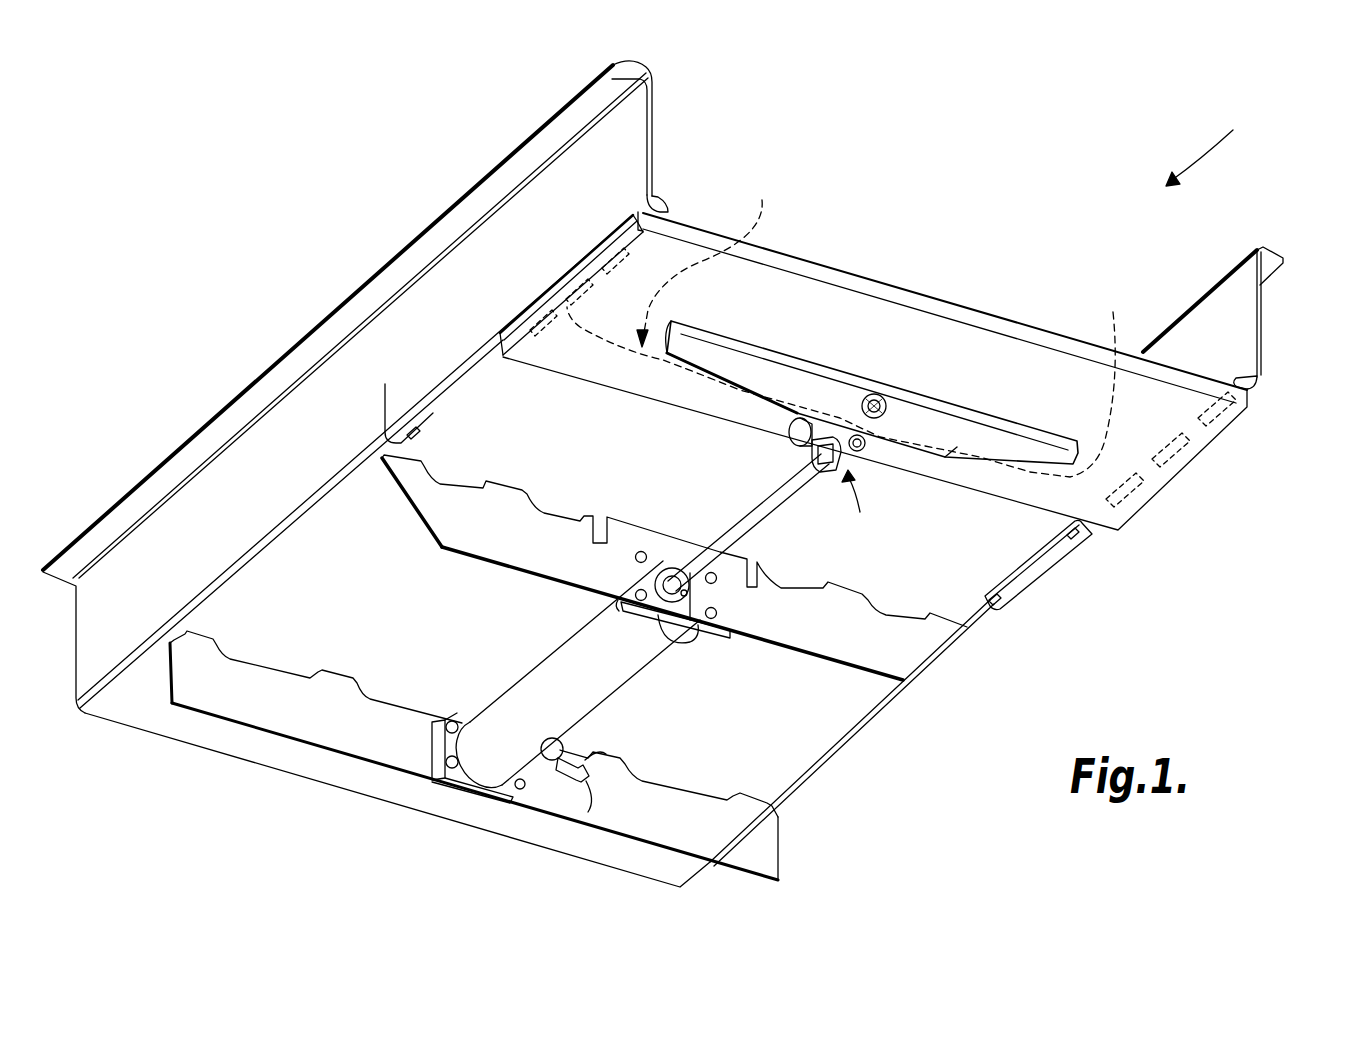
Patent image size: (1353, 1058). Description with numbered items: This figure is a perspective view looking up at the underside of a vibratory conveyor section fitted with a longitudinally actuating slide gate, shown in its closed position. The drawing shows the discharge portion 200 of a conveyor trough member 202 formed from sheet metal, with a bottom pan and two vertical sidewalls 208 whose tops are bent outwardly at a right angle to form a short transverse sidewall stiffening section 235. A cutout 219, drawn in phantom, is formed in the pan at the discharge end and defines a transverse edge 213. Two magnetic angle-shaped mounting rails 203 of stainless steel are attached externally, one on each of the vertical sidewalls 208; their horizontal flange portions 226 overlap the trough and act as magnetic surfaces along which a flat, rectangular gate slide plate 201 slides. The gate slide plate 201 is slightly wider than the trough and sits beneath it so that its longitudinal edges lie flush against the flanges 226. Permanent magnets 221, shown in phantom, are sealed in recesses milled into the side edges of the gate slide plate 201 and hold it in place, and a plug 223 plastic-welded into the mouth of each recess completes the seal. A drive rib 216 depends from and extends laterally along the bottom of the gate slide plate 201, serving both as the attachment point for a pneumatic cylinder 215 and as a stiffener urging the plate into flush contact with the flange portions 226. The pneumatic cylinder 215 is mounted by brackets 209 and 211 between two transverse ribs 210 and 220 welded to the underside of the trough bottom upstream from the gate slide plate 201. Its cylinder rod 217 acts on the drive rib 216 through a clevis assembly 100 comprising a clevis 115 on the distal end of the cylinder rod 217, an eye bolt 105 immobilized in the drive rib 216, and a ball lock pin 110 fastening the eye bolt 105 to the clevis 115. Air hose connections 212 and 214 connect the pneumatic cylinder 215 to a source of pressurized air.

The clevis assembly 100 is at (863, 502).
The eye bolt 105 is at (886, 401).
The ball lock pin 110 is at (789, 430).
The clevis 115 is at (815, 456).
The discharge portion 200 is at (1212, 146).
The gate slide plate 201 is at (887, 344).
The conveyor trough member 202 is at (256, 470).
The mounting rails 203 is at (655, 172).
The vertical sidewalls 208 is at (657, 72).
The bracket 209 is at (661, 621).
The transverse rib 210 is at (893, 643).
The bracket 211 is at (443, 748).
The air hose connection 212 is at (731, 634).
The transverse edge 213 is at (848, 380).
The air hose connection 214 is at (567, 773).
The pneumatic cylinder 215 is at (543, 672).
The drive rib 216 is at (824, 394).
The cylinder rod 217 is at (740, 506).
The cutout 219 is at (711, 260).
The transverse rib 220 is at (727, 840).
The permanent magnets 221 is at (527, 333).
The plug 223 is at (582, 300).
The horizontal flange portions 226 is at (433, 412).
The sidewall stiffening section 235 is at (607, 88).